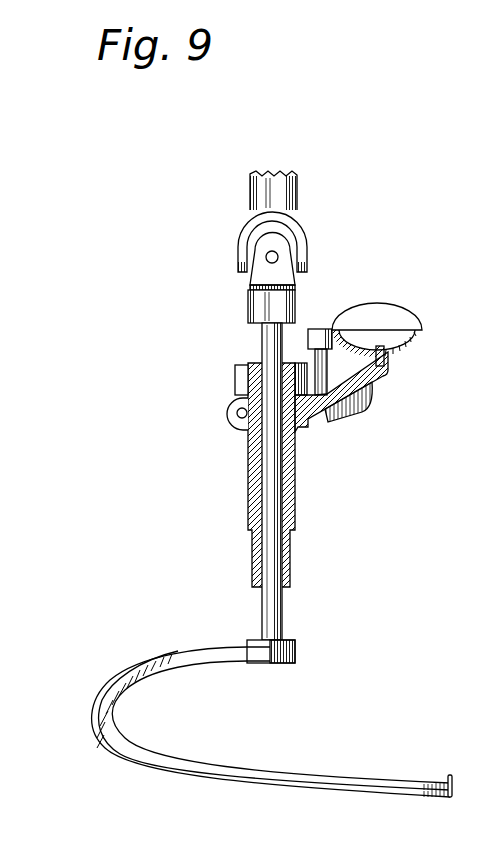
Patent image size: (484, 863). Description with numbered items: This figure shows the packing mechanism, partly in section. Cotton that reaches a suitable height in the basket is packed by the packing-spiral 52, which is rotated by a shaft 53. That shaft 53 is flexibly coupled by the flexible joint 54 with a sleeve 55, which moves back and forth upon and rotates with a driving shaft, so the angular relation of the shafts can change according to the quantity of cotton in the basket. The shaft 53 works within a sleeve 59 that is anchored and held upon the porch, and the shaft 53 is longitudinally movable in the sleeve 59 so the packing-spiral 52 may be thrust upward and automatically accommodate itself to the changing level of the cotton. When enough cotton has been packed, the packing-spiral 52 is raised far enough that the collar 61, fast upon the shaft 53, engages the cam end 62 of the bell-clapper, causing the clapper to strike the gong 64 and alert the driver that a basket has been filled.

The packing-spiral 52 is at (370, 765).
The shaft 53 is at (275, 612).
The flexible joint 54 is at (280, 252).
The sleeve 55 is at (297, 189).
The sleeve 59 is at (248, 482).
The collar 61 is at (236, 378).
The cam end 62 is at (320, 333).
The gong 64 is at (423, 333).